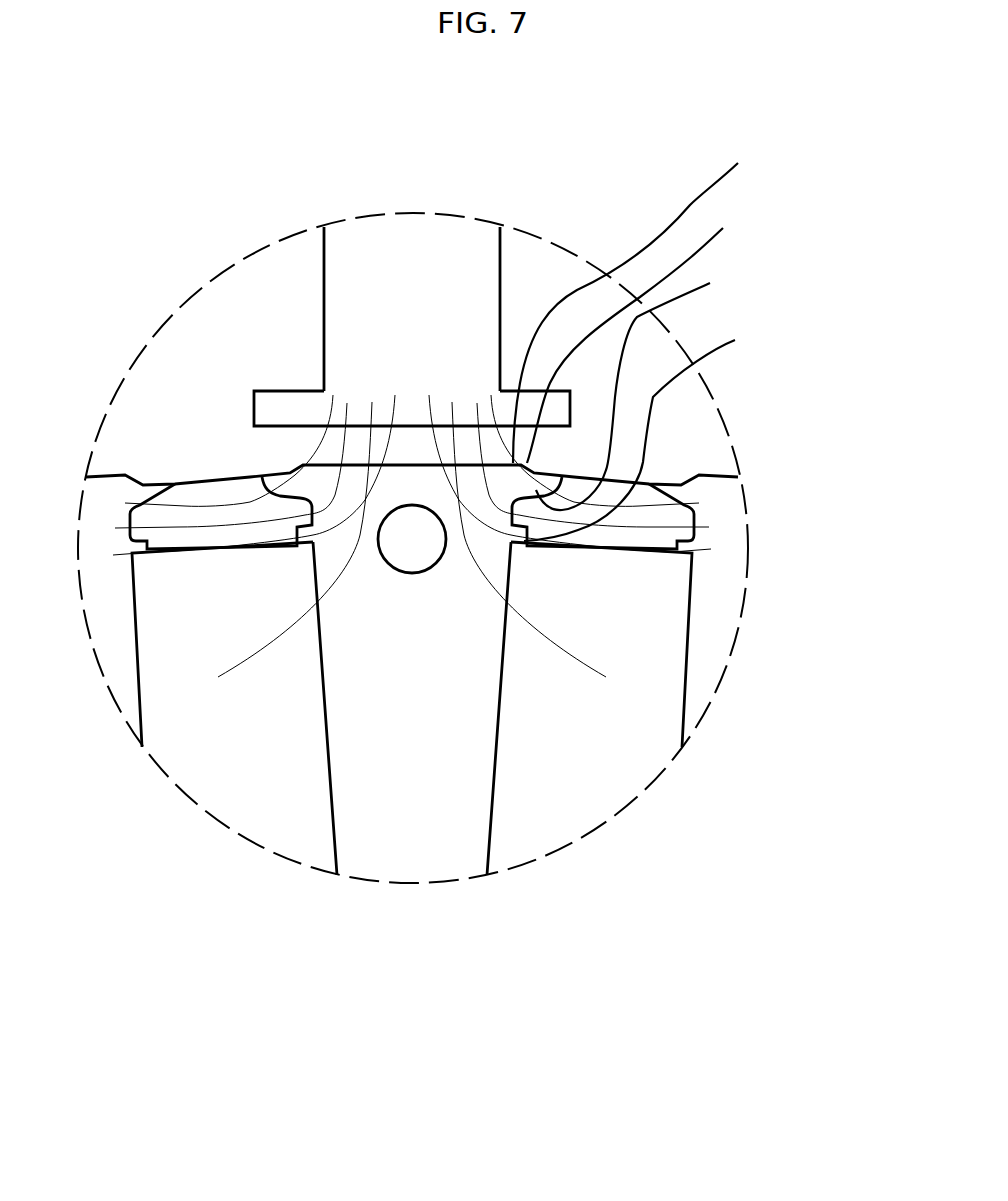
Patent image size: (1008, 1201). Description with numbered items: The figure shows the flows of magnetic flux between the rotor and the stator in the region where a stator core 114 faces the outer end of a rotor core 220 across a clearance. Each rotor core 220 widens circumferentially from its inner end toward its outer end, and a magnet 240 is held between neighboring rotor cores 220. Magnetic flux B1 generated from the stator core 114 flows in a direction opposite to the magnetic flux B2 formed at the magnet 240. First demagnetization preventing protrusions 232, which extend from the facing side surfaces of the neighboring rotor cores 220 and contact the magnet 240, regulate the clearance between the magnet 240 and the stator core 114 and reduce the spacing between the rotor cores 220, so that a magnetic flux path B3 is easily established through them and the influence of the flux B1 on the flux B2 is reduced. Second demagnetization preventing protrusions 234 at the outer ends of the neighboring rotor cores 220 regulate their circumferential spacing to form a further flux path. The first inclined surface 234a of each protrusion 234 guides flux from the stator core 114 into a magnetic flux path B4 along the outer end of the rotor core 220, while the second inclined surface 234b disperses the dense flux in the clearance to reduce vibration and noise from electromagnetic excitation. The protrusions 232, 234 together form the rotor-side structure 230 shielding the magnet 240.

The stator core 114 is at (416, 232).
The rotor core 220 is at (403, 848).
The magnet 240 is at (218, 792).
The coil assembly 230 is at (703, 340).
The first demagnetization preventing protrusion 232 is at (659, 432).
The second demagnetization preventing protrusion 234 is at (650, 303).
The first inclined surface 234a is at (662, 385).
The second inclined surface 234b is at (657, 333).
The magnetic flux B1 is at (115, 528).
The magnetic flux B2 is at (372, 402).
The magnetic flux path B3 is at (118, 554).
The magnetic flux path B4 is at (125, 503).